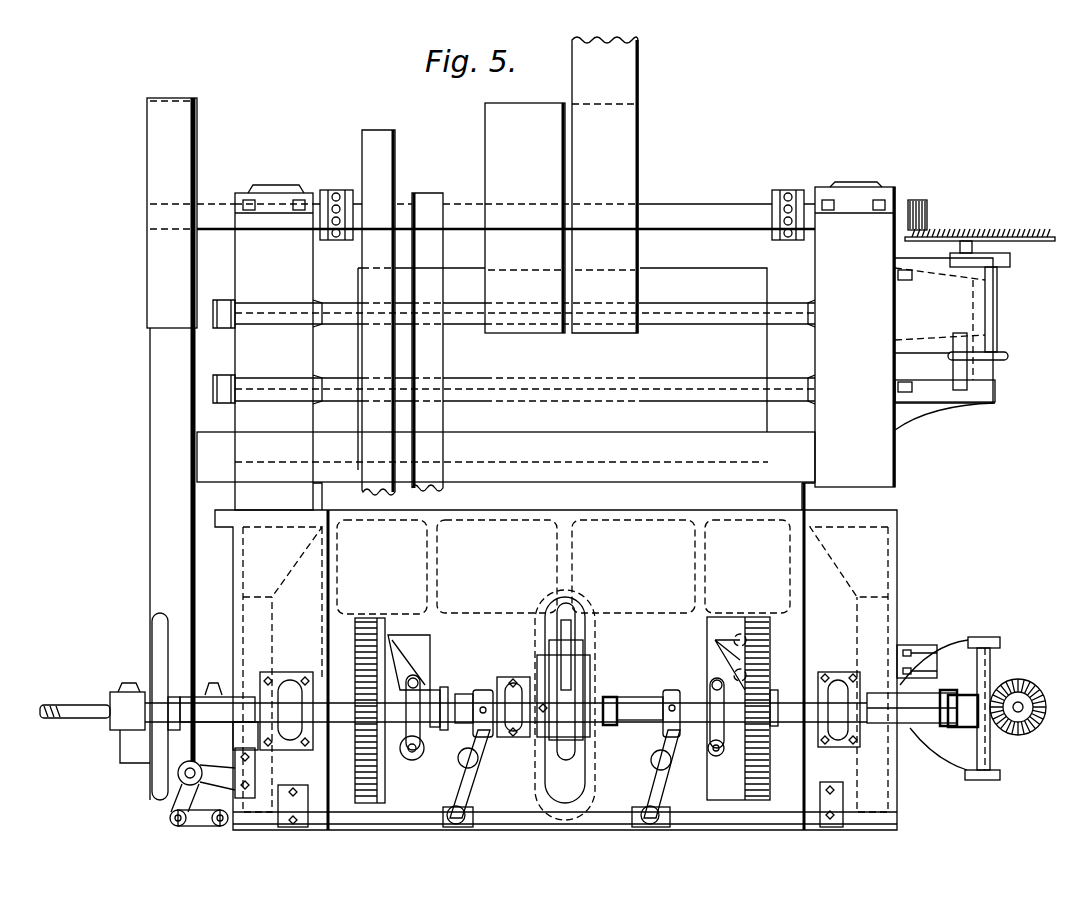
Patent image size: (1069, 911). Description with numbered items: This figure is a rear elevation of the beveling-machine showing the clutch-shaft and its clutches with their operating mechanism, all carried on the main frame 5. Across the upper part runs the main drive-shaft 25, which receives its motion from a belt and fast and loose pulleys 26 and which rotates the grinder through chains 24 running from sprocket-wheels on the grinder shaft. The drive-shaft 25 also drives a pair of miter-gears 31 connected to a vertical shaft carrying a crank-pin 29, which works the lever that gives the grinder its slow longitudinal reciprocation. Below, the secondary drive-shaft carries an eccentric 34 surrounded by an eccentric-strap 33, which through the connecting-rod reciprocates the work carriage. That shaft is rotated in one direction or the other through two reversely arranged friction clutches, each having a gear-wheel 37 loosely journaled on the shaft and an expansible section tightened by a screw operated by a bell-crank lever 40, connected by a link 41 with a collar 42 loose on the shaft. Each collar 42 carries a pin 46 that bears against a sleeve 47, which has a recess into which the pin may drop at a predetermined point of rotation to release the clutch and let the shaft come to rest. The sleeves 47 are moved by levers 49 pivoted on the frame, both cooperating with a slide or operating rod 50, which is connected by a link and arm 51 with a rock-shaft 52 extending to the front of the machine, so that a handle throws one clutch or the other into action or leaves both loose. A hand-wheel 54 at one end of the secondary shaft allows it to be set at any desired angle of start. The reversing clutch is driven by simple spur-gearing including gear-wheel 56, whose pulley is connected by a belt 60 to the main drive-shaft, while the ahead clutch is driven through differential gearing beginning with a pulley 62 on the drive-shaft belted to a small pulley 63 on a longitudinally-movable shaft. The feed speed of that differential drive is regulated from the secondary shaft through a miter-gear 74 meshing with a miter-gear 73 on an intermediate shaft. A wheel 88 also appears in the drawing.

The main frame 5 is at (542, 464).
The chains 24 is at (336, 190).
The main drive-shaft 25 is at (733, 189).
The fast and loose pulleys 26 is at (641, 127).
The crank-pin 29 is at (997, 357).
The miter-gears 31 is at (1038, 245).
The eccentric-strap 33 is at (582, 615).
The eccentric 34 is at (577, 645).
The gear-wheel 37 is at (378, 685).
The bell-crank lever 40 is at (430, 648).
The link 41 is at (433, 670).
The collar 42 is at (708, 690).
The pin 46 is at (448, 697).
The sleeve 47 is at (488, 690).
The levers 49 is at (483, 743).
The operating rod 50 is at (717, 815).
The link and arm 51 is at (170, 818).
The rock-shaft 52 is at (178, 773).
The hand-wheel 54 is at (155, 632).
The gear-wheel 56 is at (925, 712).
The belt 60 is at (440, 262).
The pulley 62 is at (205, 172).
The small pulley 63 is at (198, 680).
The miter-gear 73 is at (1018, 735).
The miter-gear 74 is at (973, 732).
The wheel 88 is at (397, 312).